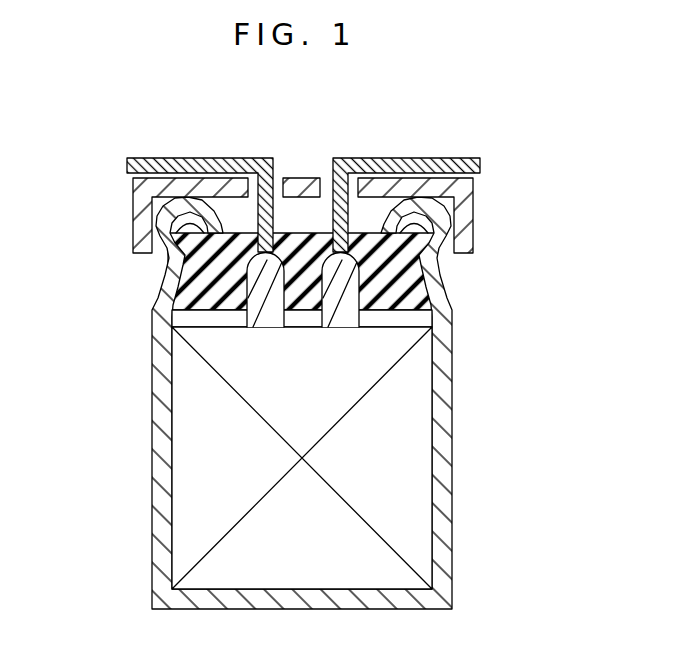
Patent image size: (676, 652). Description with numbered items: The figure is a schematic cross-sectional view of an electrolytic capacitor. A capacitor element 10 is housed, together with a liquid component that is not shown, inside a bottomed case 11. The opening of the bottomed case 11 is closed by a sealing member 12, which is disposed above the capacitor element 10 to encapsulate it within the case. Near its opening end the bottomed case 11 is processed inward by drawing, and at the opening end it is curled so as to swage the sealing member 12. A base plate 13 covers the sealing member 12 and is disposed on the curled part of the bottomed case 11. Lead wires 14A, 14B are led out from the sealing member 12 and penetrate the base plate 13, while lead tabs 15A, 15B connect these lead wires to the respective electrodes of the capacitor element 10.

The capacitor element 10 is at (208, 437).
The bottomed case 11 is at (447, 410).
The sealing member 12 is at (392, 277).
The base plate 13 is at (300, 178).
The lead wire 14A is at (198, 158).
The lead wire 14B is at (413, 160).
The lead tab 15A is at (263, 282).
The lead tab 15B is at (335, 302).